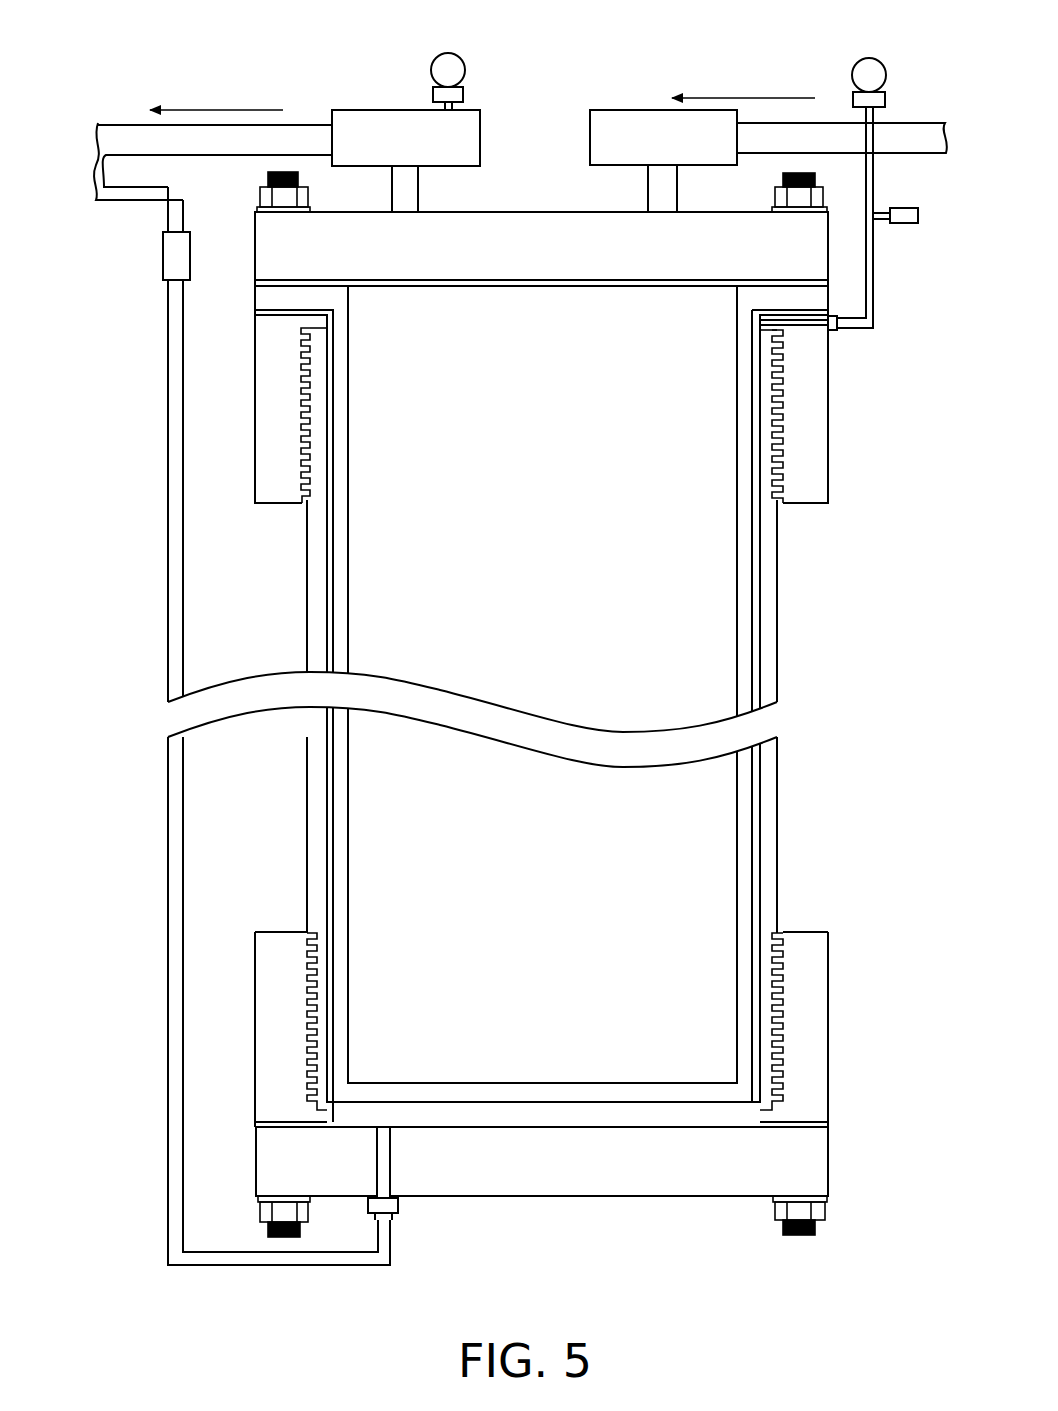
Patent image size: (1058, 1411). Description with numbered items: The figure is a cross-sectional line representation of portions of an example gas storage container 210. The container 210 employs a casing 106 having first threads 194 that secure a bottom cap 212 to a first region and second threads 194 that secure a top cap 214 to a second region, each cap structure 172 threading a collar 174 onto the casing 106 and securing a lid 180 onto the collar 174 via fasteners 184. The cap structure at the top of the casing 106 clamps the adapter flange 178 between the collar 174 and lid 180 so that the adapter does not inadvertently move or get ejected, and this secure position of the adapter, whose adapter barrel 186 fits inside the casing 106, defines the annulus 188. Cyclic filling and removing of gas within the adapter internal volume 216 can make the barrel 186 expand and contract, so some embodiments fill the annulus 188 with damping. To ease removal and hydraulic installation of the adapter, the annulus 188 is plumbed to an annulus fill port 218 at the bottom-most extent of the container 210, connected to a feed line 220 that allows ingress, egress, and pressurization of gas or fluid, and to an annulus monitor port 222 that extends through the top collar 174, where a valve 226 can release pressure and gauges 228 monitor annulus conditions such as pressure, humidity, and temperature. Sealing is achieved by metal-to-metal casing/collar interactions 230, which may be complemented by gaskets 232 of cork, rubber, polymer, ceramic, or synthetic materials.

The casing 106 is at (307, 655).
The cap structure 172 is at (249, 400).
The collar 174 is at (830, 408).
The adapter flange 178 is at (356, 300).
The lid 180 is at (563, 259).
The fasteners 184 is at (314, 200).
The adapter barrel 186 is at (350, 566).
The annulus 188 is at (339, 624).
The threads 194 is at (297, 485).
The gas storage container 210 is at (134, 32).
The bottom cap 212 is at (846, 1057).
The top cap 214 is at (845, 472).
The adapter internal volume 216 is at (563, 520).
The annulus fill port 218 is at (410, 1214).
The feed line 220 is at (168, 617).
The annulus monitor port 222 is at (844, 336).
The valve 226 is at (159, 257).
The gauges 228 is at (473, 82).
The casing/collar interactions 230 is at (338, 329).
The gaskets 232 is at (250, 286).